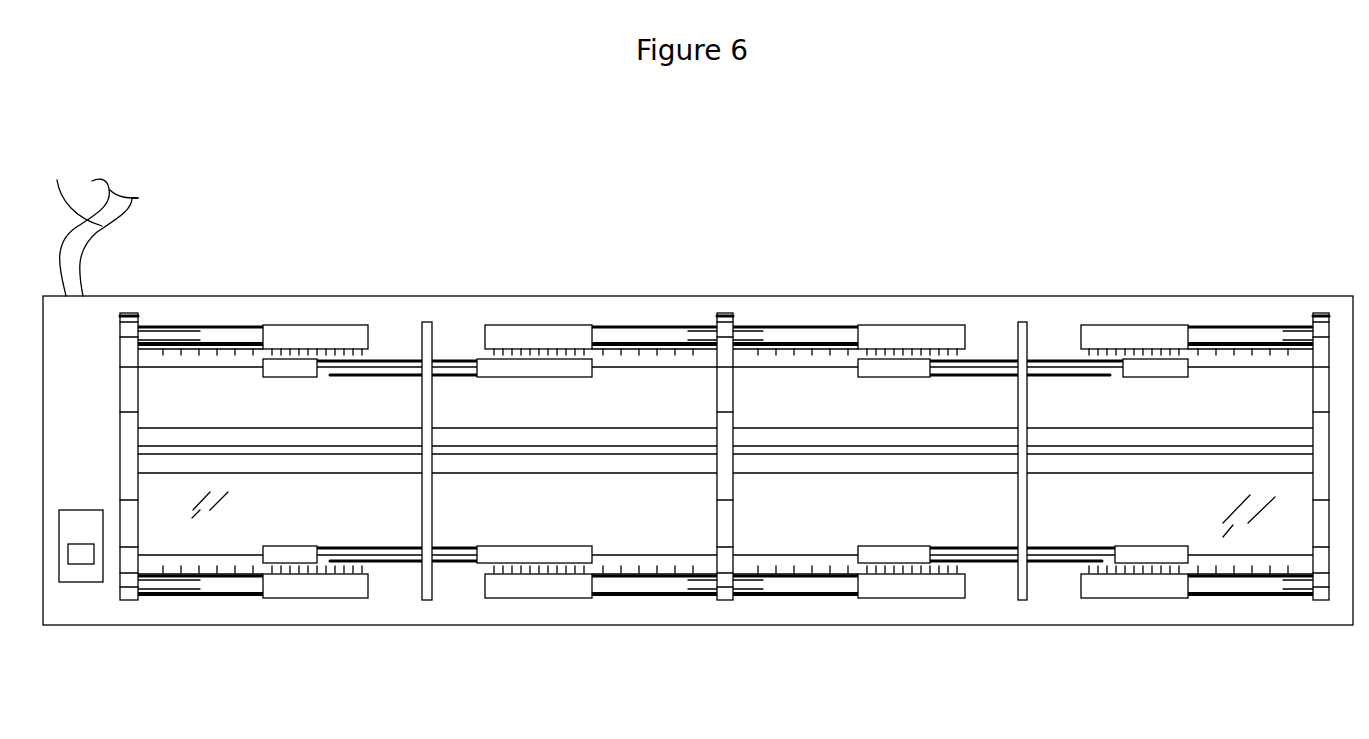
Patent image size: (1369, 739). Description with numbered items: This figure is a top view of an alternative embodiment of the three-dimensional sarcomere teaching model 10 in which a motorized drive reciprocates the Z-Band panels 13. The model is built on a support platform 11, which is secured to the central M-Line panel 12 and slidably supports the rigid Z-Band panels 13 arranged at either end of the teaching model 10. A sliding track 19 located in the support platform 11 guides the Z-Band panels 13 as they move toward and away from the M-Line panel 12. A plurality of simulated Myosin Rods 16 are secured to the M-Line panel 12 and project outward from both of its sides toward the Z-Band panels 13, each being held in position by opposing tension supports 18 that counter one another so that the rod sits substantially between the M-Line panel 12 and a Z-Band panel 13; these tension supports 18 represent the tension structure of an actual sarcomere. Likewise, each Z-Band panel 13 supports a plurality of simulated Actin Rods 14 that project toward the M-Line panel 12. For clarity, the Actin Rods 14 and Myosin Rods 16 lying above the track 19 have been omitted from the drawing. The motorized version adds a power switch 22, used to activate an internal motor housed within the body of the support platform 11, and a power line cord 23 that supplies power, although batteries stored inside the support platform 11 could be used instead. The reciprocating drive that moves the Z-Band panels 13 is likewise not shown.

The teaching model 10 is at (993, 195).
The support platform 11 is at (413, 615).
The M-Line panel 12 is at (428, 322).
The Z-Band panel 13 is at (130, 313).
The simulated Actin Rods 14 is at (240, 325).
The simulated Myosin Rods 16 is at (342, 378).
The opposing tension supports 18 is at (183, 552).
The sliding track 19 is at (592, 463).
The power switch 22 is at (77, 572).
The power line cord 23 is at (94, 224).